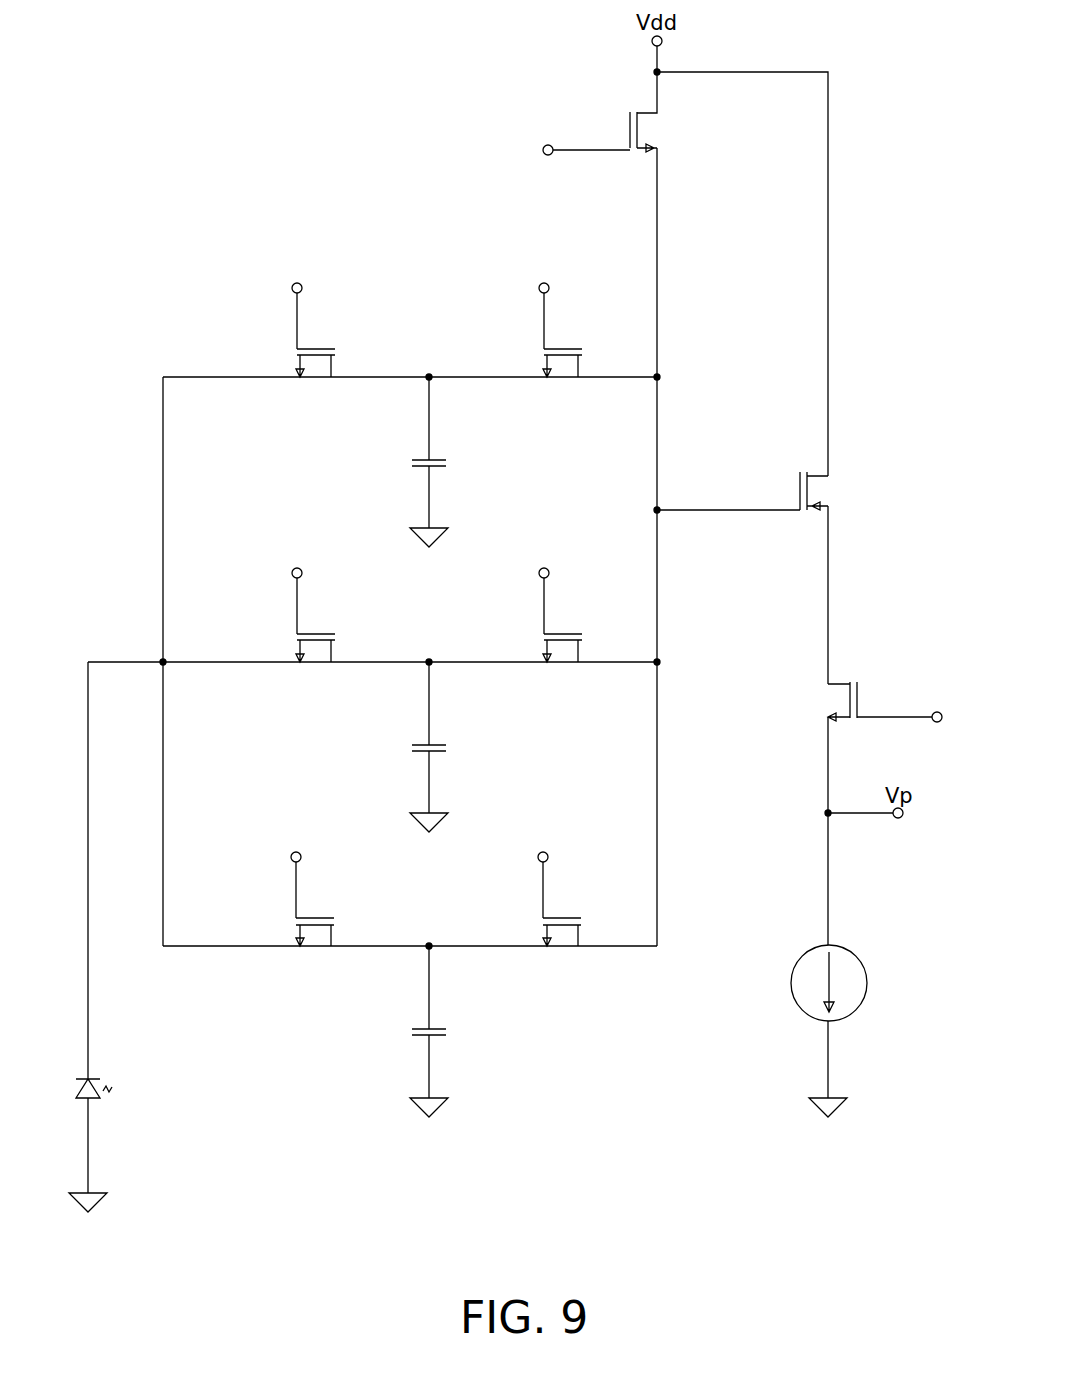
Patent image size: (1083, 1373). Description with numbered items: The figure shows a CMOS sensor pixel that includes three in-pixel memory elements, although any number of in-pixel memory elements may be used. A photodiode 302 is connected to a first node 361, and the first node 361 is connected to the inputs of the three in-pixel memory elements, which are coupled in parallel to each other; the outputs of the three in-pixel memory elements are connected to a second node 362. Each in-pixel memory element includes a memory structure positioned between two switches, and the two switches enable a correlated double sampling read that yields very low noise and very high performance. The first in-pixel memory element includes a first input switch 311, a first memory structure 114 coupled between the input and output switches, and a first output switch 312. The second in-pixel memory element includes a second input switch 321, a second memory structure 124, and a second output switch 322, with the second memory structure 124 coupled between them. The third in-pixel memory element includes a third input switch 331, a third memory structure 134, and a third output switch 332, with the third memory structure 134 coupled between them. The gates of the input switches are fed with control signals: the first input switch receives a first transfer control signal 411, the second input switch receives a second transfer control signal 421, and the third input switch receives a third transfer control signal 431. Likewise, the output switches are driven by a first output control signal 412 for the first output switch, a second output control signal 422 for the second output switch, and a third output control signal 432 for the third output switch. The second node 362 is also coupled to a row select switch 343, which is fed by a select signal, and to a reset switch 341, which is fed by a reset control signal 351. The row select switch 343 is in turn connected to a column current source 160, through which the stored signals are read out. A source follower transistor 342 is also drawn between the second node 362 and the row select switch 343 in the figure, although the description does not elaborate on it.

The reset switch 341 is at (698, 138).
The Vreset 351 is at (552, 154).
The source follower transistor SF 342 is at (853, 497).
The row select switch 343 is at (812, 713).
The second node 362 is at (660, 380).
The first node 361 is at (161, 659).
The column current source I1 160 is at (880, 998).
The photodiode 302 is at (148, 1100).
The control signal Vtx31 431 is at (301, 293).
The control signal Vtx32 432 is at (548, 293).
The control signal Vtx21 421 is at (301, 578).
The control signal Vtx22 422 is at (548, 578).
The control signal Vtx11 411 is at (300, 862).
The control signal Vtx12 412 is at (547, 862).
The third input switch Q31 331 is at (318, 404).
The third output switch Q32 332 is at (580, 404).
The second input switch Q21 321 is at (318, 689).
The second output switch Q22 322 is at (580, 689).
The first input switch Q11 311 is at (318, 973).
The first output switch Q12 312 is at (580, 973).
The third memory structure 134 is at (488, 476).
The second memory structure 124 is at (488, 761).
The first memory structure 114 is at (488, 1045).